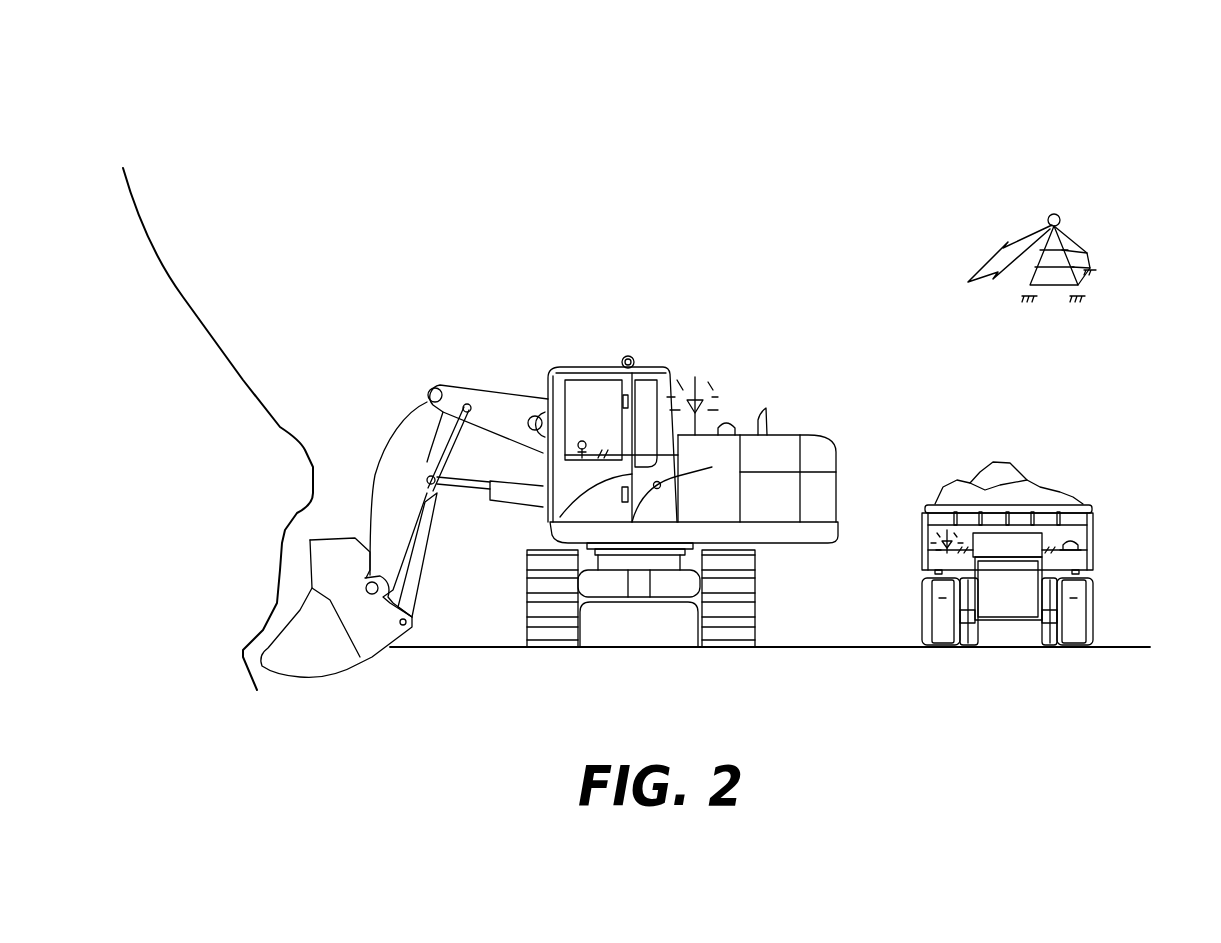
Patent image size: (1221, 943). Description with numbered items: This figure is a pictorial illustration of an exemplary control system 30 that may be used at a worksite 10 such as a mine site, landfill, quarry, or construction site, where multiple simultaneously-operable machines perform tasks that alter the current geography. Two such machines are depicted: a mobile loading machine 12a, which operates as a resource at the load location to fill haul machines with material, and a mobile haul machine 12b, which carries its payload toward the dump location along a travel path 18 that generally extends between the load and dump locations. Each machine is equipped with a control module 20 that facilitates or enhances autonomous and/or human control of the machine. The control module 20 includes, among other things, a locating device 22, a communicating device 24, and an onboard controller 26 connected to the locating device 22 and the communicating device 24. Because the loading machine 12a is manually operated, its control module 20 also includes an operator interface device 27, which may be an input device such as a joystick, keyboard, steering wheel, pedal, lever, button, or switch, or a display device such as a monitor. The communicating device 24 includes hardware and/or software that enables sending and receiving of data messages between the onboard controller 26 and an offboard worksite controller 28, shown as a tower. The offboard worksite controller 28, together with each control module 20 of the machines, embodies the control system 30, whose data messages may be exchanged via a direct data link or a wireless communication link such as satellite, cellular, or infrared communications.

The worksite 10 is at (918, 717).
The mobile loading machine 12a is at (816, 452).
The mobile haul machine 12b is at (1092, 505).
The travel path 18 is at (1120, 647).
The control module 20 is at (733, 376).
The locating device 22 is at (730, 422).
The communicating device 24 is at (698, 388).
The onboard controller 26 is at (721, 466).
The operator interface device 27 is at (581, 439).
The offboard worksite controller 28 is at (1054, 214).
The control system 30 is at (1099, 78).